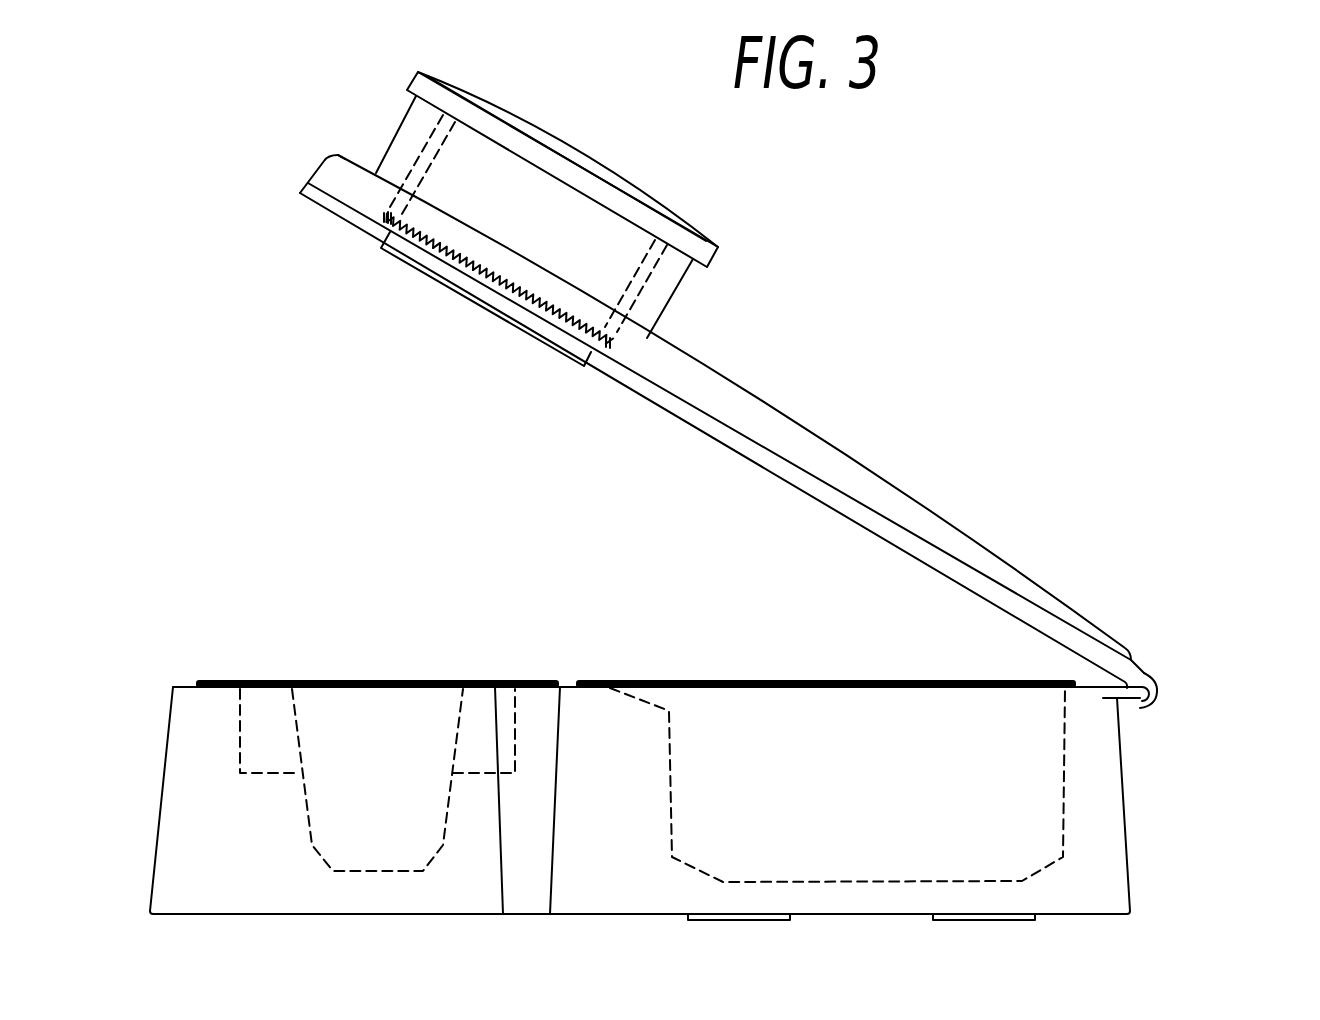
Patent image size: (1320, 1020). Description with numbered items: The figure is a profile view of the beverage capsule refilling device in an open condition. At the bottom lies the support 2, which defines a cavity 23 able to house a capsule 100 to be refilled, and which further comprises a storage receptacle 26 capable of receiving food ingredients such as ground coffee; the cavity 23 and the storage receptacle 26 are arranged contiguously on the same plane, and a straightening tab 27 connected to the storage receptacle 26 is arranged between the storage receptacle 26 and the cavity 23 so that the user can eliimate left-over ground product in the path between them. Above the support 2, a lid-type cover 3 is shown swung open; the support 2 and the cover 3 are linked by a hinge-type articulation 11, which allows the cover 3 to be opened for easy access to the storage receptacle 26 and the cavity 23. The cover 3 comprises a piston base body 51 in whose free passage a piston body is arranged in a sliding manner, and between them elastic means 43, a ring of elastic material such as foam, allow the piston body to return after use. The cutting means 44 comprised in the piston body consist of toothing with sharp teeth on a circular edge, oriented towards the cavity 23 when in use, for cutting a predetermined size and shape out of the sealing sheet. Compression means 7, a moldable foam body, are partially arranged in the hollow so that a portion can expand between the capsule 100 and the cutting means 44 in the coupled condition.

The support 2 is at (701, 767).
The cover 3 is at (690, 390).
The compression means 7 is at (500, 320).
The hinge-type articulation 11 is at (1152, 690).
The cavity 23 is at (265, 748).
The storage receptacle 26 is at (837, 748).
The straightening tab 27 is at (667, 710).
The elastic means 43 is at (663, 289).
The cutting means 44 is at (455, 258).
The piston base body 51 is at (357, 190).
The beverage capsule 100 is at (299, 780).